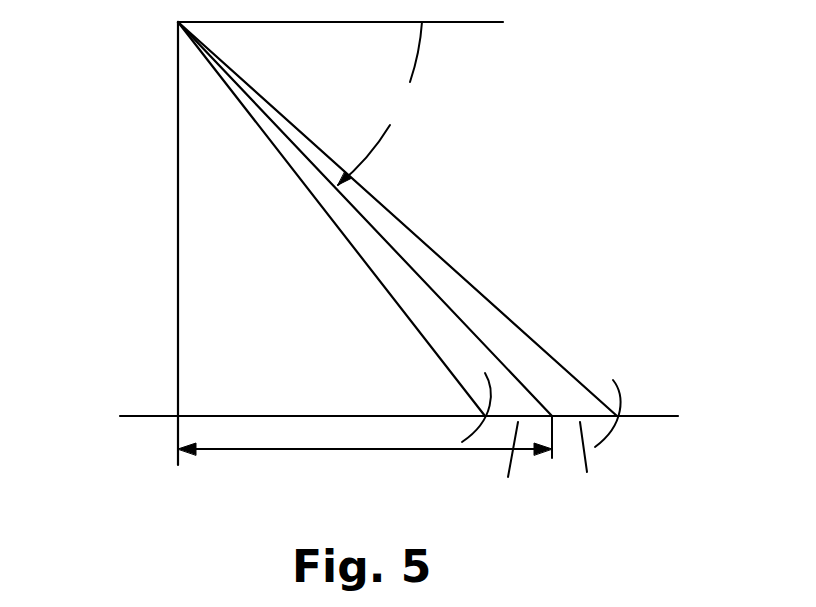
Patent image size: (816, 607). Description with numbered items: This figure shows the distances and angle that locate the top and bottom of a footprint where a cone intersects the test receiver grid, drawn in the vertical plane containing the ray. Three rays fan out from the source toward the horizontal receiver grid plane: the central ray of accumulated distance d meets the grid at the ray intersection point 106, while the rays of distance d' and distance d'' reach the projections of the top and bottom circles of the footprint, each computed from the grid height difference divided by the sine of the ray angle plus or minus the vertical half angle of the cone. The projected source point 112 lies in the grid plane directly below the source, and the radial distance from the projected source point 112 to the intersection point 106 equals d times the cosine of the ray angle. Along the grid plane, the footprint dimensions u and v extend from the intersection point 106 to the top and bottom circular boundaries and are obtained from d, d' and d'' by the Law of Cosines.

The ray intersection point 106 is at (555, 412).
The projected source point 112 is at (178, 412).
The accumulated distance d is at (365, 219).
The distance to top circle projection d' is at (398, 219).
The distance to bottom circle projection d'' is at (331, 219).
The footprint distance to top boundary u is at (589, 468).
The footprint distance to bottom boundary v is at (510, 468).